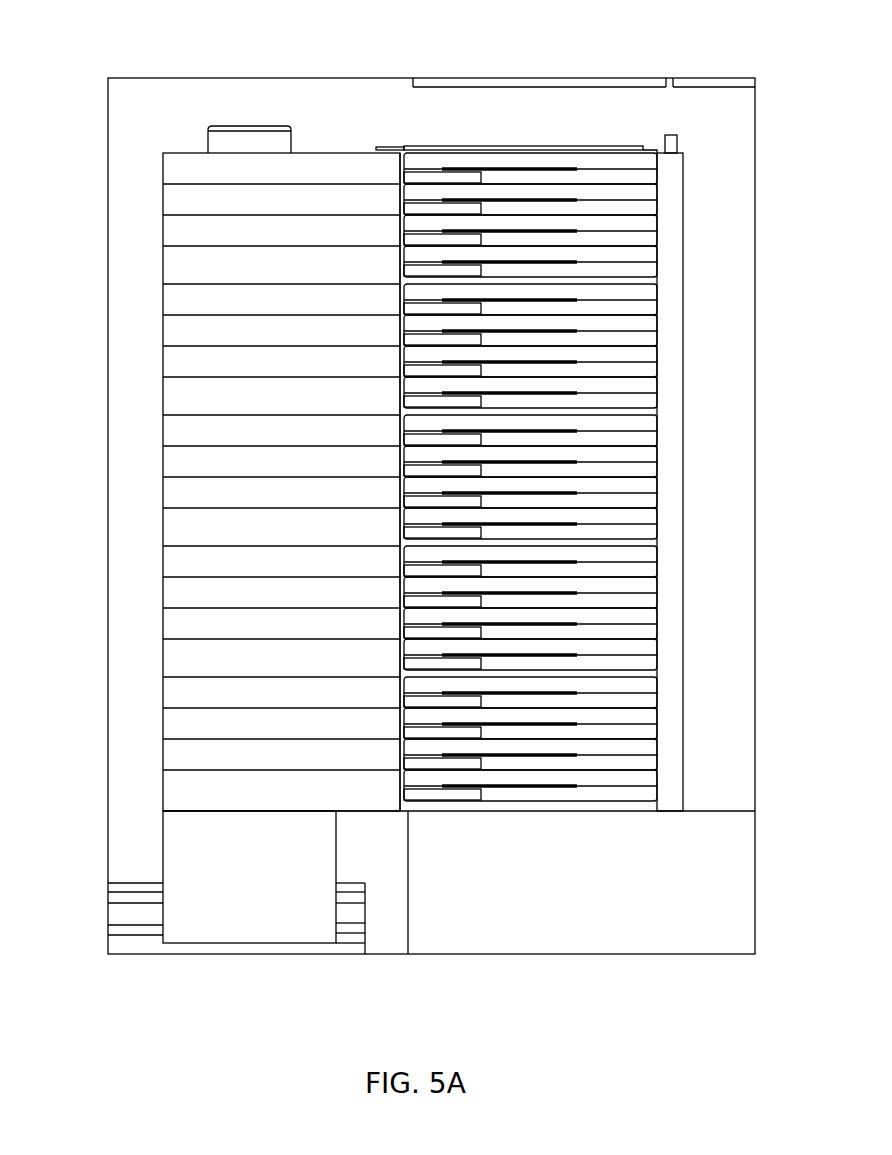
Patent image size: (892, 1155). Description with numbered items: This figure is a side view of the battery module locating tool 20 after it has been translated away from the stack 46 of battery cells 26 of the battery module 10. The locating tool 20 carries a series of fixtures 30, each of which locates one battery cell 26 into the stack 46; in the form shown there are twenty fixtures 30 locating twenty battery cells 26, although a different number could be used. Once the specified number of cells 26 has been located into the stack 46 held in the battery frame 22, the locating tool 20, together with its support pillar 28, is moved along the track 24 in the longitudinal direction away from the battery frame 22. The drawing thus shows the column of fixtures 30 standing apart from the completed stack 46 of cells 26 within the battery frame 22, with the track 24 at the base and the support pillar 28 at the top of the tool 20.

The battery module 10 is at (425, 482).
The battery module locating tool 20 is at (141, 66).
The battery frame 22 is at (681, 472).
The track 24 is at (163, 925).
The battery cells 26 is at (648, 352).
The support pillar 28 is at (262, 127).
The fixtures 30 is at (170, 262).
The stack 46 is at (628, 128).